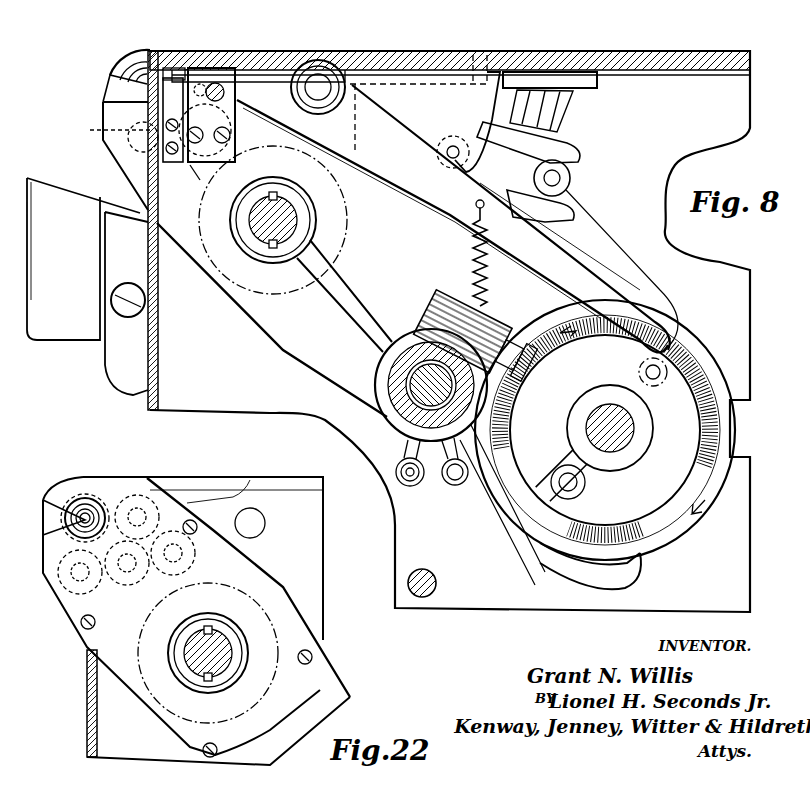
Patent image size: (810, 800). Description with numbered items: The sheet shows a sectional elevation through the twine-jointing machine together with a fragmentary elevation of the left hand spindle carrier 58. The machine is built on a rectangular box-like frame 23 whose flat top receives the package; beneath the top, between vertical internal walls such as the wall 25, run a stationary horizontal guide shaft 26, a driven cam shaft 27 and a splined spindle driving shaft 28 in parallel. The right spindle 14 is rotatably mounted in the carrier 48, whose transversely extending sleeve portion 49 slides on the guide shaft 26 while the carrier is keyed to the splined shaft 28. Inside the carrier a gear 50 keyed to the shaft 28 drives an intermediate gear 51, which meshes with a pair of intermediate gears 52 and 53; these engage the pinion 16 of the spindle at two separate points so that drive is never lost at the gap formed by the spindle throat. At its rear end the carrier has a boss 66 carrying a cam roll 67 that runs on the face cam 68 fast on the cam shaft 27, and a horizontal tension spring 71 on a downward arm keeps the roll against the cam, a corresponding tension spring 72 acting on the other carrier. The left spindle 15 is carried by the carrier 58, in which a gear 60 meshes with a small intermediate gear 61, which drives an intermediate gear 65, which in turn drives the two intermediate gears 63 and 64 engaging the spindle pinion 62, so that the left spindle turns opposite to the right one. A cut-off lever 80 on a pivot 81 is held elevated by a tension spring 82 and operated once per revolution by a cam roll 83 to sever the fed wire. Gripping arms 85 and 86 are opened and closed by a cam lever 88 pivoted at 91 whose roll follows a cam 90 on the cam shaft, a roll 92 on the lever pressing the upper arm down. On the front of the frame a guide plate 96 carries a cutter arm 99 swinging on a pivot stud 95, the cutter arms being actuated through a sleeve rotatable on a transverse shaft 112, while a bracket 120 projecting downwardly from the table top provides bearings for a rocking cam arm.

In FIG. 22, the right spindle 14 is at (70, 518).
In FIG. 8, the left spindle 15 is at (120, 80).
In FIG. 8, the pinion 16 is at (122, 60).
In FIG. 8, the frame 23 is at (160, 367).
In FIG. 8, the internal wall 25 is at (752, 378).
In FIG. 8, the guide shaft 26 is at (418, 380).
In FIG. 8, the cam shaft 27 is at (598, 428).
In FIG. 8, the spindle driving shaft 28 is at (285, 205).
In FIG. 22, the spindle driving shaft 28 is at (195, 650).
In FIG. 8, the carrier 48 is at (238, 306).
In FIG. 8, the sleeve portion 49 is at (415, 330).
In FIG. 8, the gear 50 is at (345, 250).
In FIG. 8, the intermediate gear 51 is at (185, 181).
In FIG. 8, the intermediate gear 52 is at (112, 156).
In FIG. 8, the intermediate gear 53 is at (220, 87).
In FIG. 22, the carrier 58 is at (327, 668).
In FIG. 22, the gear 60 is at (155, 712).
In FIG. 22, the intermediate gear 61 is at (196, 560).
In FIG. 22, the spindle pinion 62 is at (93, 494).
In FIG. 22, the intermediate gear 63 is at (66, 590).
In FIG. 22, the intermediate gear 64 is at (142, 495).
In FIG. 22, the intermediate gear 65 is at (124, 585).
In FIG. 8, the boss 66 is at (490, 335).
In FIG. 8, the cam roll 67 is at (530, 375).
In FIG. 8, the face cam 68 is at (678, 550).
In FIG. 8, the tension spring 71 is at (460, 483).
In FIG. 8, the tension spring 72 is at (416, 486).
In FIG. 8, the cut-off lever 80 is at (528, 262).
In FIG. 8, the pivot 81 is at (308, 87).
In FIG. 8, the tension spring 82 is at (470, 250).
In FIG. 8, the cam roll 83 is at (586, 487).
In FIG. 8, the gripping arm 85 is at (565, 146).
In FIG. 8, the gripping arm 86 is at (568, 218).
In FIG. 8, the cam lever 88 is at (640, 262).
In FIG. 8, the cam 90 is at (520, 540).
In FIG. 8, the pivot 91 is at (455, 146).
In FIG. 8, the roll 92 is at (572, 177).
In FIG. 8, the pivot stud 95 is at (112, 295).
In FIG. 8, the guide plate 96 is at (68, 328).
In FIG. 8, the cutter arm 99 is at (108, 238).
In FIG. 8, the transverse shaft 112 is at (438, 584).
In FIG. 8, the bracket 120 is at (577, 101).